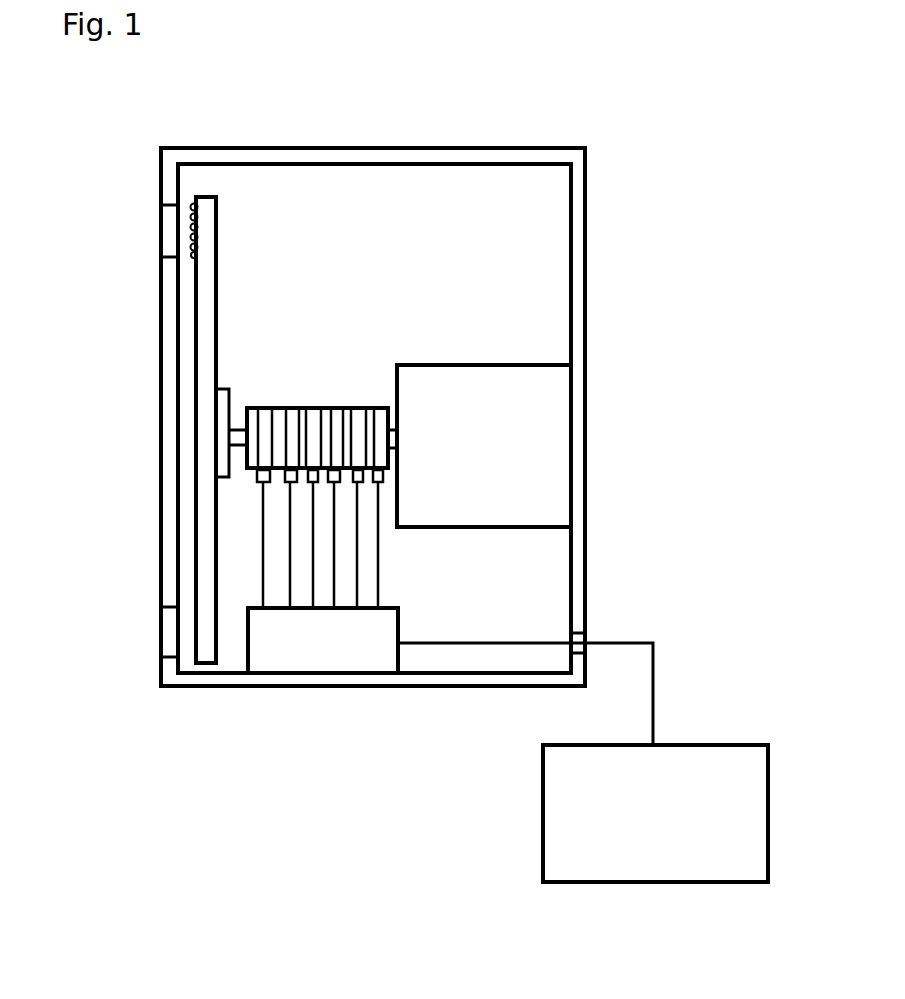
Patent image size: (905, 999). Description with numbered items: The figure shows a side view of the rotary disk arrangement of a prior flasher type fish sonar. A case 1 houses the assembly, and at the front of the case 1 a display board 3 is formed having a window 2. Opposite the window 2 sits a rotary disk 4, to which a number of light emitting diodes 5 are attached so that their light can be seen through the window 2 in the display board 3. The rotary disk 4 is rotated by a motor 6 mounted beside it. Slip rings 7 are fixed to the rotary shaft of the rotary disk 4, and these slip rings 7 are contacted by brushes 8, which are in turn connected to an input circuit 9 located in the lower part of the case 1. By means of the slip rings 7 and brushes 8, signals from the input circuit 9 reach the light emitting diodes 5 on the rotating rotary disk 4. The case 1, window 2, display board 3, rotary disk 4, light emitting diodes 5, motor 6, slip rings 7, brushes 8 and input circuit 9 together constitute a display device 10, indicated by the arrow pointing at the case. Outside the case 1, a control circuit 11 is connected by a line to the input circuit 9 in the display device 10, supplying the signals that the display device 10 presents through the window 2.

The case 1 is at (491, 148).
The window 2 is at (168, 237).
The display board 3 is at (168, 340).
The rotary disk 4 is at (210, 522).
The light emitting diodes 5 is at (195, 222).
The motor 6 is at (545, 443).
The slip rings 7 is at (300, 408).
The brushes 8 is at (379, 483).
The input circuit 9 is at (295, 652).
The display device 10 is at (593, 288).
The control circuit 11 is at (555, 802).